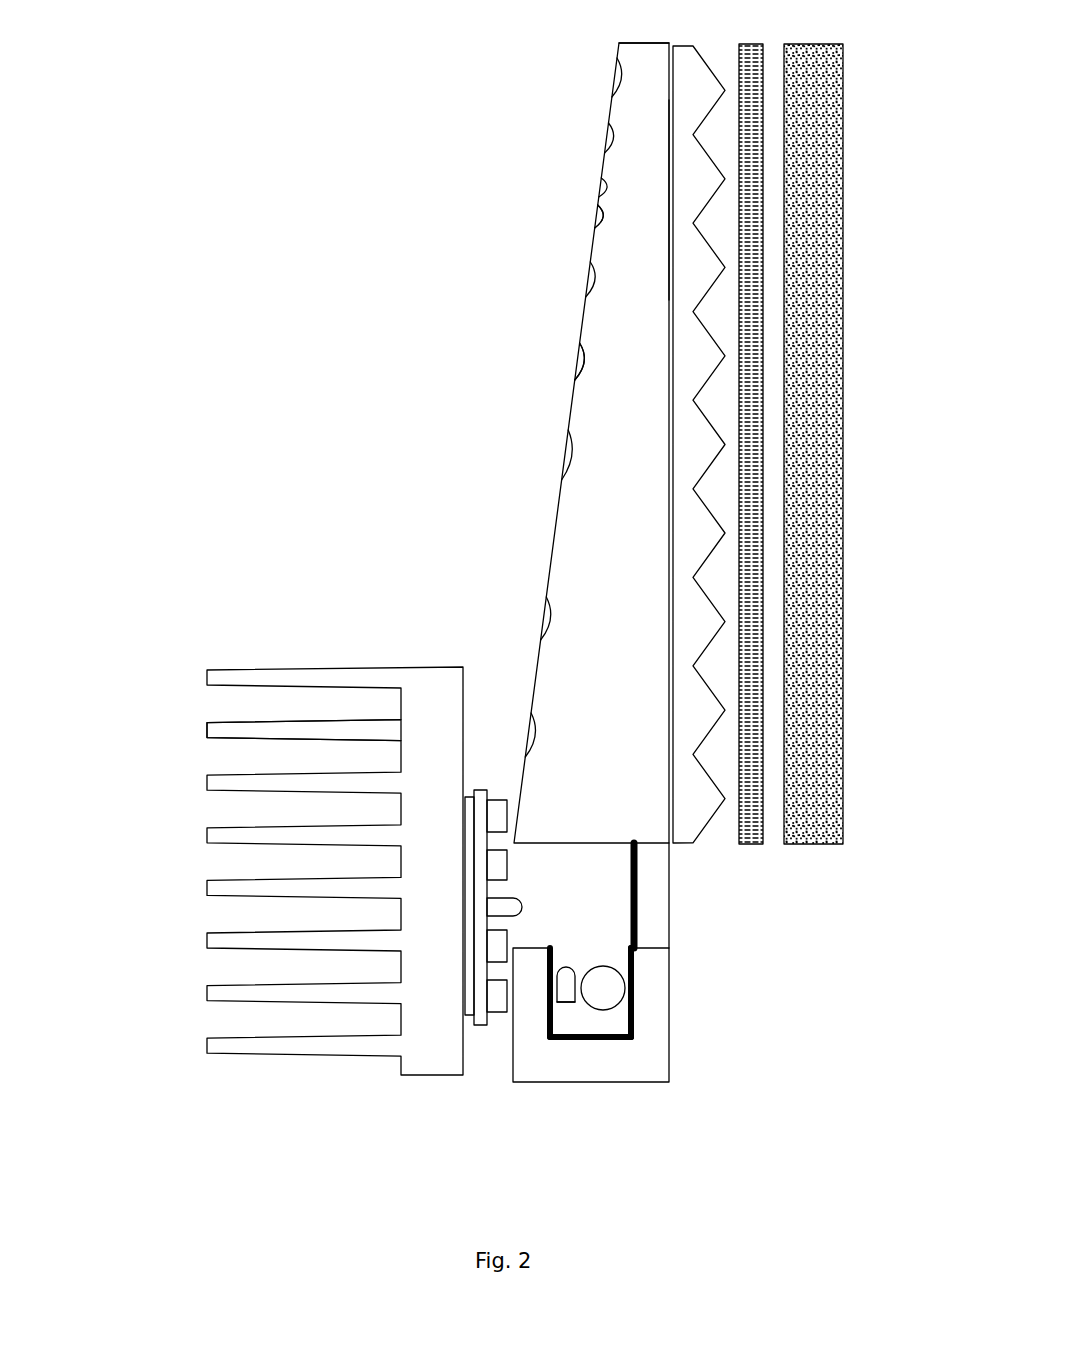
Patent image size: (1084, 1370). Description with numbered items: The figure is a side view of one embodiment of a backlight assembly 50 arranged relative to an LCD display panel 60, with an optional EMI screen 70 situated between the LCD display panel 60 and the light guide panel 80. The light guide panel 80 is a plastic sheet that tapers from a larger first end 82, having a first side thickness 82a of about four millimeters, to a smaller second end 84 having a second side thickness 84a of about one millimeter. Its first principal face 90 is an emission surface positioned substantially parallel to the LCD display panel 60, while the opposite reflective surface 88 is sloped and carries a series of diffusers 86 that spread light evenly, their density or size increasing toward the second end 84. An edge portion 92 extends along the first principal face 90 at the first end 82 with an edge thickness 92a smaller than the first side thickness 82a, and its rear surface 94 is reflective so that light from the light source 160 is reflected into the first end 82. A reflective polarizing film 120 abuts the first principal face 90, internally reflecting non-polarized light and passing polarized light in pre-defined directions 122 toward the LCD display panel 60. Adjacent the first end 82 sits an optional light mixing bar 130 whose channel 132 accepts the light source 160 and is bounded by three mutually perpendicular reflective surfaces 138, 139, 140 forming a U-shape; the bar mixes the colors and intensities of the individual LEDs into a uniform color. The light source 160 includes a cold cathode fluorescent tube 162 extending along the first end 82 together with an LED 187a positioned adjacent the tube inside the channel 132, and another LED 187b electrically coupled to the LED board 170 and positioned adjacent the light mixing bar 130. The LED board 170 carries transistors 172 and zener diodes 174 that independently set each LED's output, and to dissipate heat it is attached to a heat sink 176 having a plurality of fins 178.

The backlight assembly 50 is at (153, 210).
The LCD display panel 60 is at (832, 838).
The EMI screen 70 is at (750, 827).
The light guide panel 80 is at (570, 413).
The first end 82 is at (605, 845).
The first side thickness 82a is at (661, 842).
The second end 84 is at (639, 43).
The second side thickness 84a is at (661, 38).
The diffusers 86 is at (600, 213).
The reflective surface 88 is at (592, 326).
The first principal face 90 is at (668, 212).
The edge portion 92 is at (652, 902).
The edge thickness 92a is at (602, 935).
The rear surface 94 is at (630, 880).
The reflective polarizing film 120 is at (697, 795).
The pre-defined directions 122 is at (850, 465).
The light mixing bar 130 is at (657, 1070).
The channel 132 is at (603, 1023).
The reflective surface 138 is at (553, 1020).
The reflective surface 139 is at (575, 1040).
The reflective surface 140 is at (635, 1020).
The light source 160 is at (585, 968).
The cold cathode fluorescent tube 162 is at (613, 992).
The LED board 170 is at (482, 1023).
The transistors 172 is at (495, 940).
The zener diodes 174 is at (498, 1003).
The heat sink 176 is at (400, 667).
The fins 178 is at (222, 725).
The LED 187a is at (565, 988).
The LED 187b is at (502, 913).